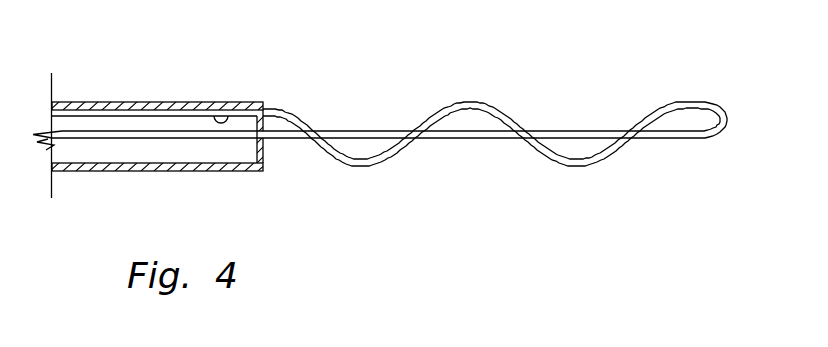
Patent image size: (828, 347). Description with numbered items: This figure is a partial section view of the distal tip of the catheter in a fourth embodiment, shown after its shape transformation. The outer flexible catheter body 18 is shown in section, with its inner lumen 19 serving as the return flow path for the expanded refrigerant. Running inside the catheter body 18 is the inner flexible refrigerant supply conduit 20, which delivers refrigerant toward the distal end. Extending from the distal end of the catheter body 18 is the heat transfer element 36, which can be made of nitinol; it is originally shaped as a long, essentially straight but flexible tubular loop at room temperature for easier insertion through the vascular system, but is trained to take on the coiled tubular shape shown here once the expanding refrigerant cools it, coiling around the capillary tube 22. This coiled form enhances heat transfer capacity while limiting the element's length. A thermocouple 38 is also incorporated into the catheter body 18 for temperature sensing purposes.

The catheter body 18 is at (87, 103).
The inner lumen 19 is at (126, 121).
The refrigerant supply conduit 20 is at (173, 131).
The capillary tube 22 is at (571, 130).
The heat transfer element 36 is at (471, 102).
The thermocouple 38 is at (216, 102).